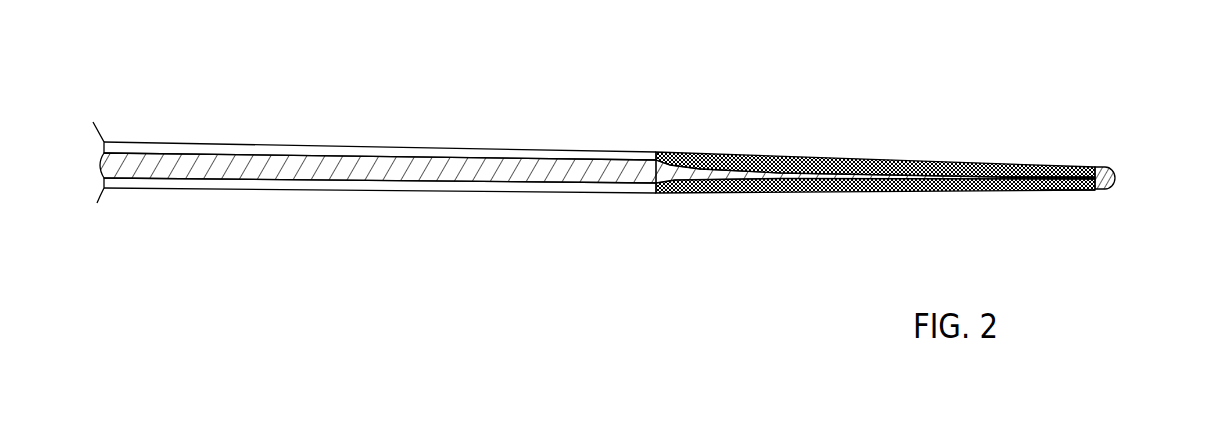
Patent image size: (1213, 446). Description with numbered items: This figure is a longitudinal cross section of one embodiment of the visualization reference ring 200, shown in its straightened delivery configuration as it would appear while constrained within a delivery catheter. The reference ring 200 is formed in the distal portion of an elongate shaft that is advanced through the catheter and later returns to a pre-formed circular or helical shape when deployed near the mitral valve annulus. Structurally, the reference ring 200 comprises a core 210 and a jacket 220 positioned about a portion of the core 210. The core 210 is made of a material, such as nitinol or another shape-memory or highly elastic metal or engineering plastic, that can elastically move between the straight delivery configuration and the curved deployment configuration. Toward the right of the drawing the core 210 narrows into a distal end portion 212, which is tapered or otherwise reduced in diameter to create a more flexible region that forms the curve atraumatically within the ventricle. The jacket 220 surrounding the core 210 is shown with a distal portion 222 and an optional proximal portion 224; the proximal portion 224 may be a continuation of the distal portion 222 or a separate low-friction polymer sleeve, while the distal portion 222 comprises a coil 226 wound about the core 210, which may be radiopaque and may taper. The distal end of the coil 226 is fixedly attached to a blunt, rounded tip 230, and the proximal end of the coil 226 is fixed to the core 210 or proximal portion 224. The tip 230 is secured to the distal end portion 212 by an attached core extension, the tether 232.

The visualization reference ring 200 is at (638, 201).
The core 210 is at (541, 158).
The distal end portion 212 is at (745, 165).
The jacket 220 is at (345, 190).
The distal portion 222 is at (865, 193).
The proximal portion 224 is at (268, 144).
The coil 226 is at (852, 157).
The tip 230 is at (1102, 167).
The tether 232 is at (1068, 190).